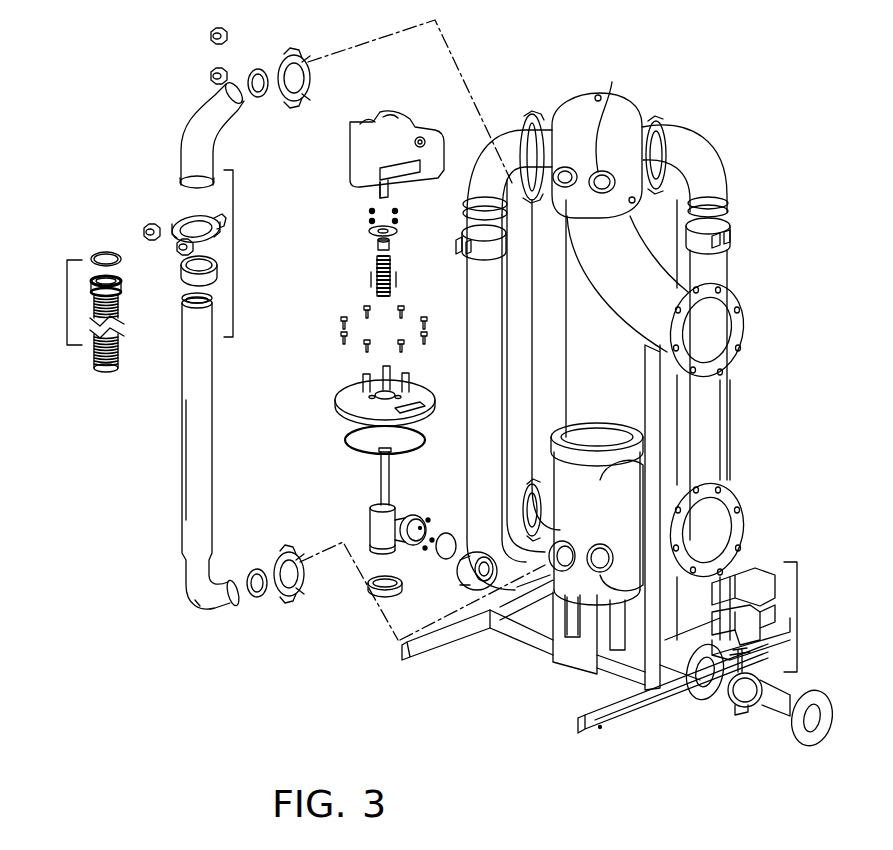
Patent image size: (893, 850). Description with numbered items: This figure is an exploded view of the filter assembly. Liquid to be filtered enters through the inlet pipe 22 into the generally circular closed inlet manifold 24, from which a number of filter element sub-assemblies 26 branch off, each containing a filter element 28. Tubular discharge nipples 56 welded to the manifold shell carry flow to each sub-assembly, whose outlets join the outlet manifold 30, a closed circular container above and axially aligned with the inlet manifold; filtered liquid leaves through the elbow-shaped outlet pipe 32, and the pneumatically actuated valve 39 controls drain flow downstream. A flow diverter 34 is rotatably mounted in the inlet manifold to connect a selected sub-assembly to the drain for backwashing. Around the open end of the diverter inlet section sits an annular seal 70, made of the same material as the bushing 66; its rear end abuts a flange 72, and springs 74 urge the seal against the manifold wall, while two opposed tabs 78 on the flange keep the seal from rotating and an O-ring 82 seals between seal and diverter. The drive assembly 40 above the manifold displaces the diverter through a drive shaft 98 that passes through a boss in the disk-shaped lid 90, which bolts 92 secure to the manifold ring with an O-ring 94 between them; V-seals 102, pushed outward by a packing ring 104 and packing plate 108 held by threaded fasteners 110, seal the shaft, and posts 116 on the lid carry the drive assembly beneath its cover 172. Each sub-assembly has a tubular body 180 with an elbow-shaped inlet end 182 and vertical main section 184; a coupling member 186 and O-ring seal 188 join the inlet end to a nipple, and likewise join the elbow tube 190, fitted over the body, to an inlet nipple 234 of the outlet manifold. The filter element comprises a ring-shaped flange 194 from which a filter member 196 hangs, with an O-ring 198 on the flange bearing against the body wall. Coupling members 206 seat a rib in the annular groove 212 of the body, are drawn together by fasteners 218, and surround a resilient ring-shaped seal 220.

The inlet pipe 22 is at (621, 525).
The inlet manifold 24 is at (597, 548).
The filter element sub-assembly 26 is at (233, 255).
The filter element 28 is at (67, 300).
The outlet manifold 30 is at (597, 155).
The outlet pipe 32 is at (659, 299).
The flow diverter 34 is at (375, 527).
The pneumatically actuated valve 39 is at (797, 617).
The drive assembly 40 is at (455, 118).
The discharge nipple 56 is at (590, 545).
The bushing 66 is at (370, 588).
The annular seal 70 is at (466, 597).
The flange 72 is at (370, 548).
The springs 74 is at (432, 538).
The tabs 78 is at (392, 490).
The O-ring 82 is at (446, 560).
The lid 90 is at (350, 407).
The bolts 92 is at (340, 336).
The O-ring 94 is at (410, 452).
The drive shaft 98 is at (390, 187).
The V-seals 102 is at (392, 292).
The packing ring 104 is at (392, 248).
The packing plate 108 is at (398, 231).
The threaded fasteners 110 is at (365, 218).
The posts 116 is at (365, 382).
The cover 172 is at (397, 154).
The body 180 is at (190, 513).
The inlet end 182 is at (214, 600).
The main section 184 is at (200, 482).
The coupling member 186 is at (232, 38).
The O-ring seal 188 is at (262, 98).
The elbow tube 190 is at (190, 137).
The flange 194 is at (122, 290).
The filter member 196 is at (93, 352).
The O-ring 198 is at (100, 252).
The coupling members 206 is at (195, 212).
The annular groove 212 is at (190, 306).
The fasteners 218 is at (178, 248).
The seal 220 is at (182, 265).
The inlet nipples 234 is at (612, 90).